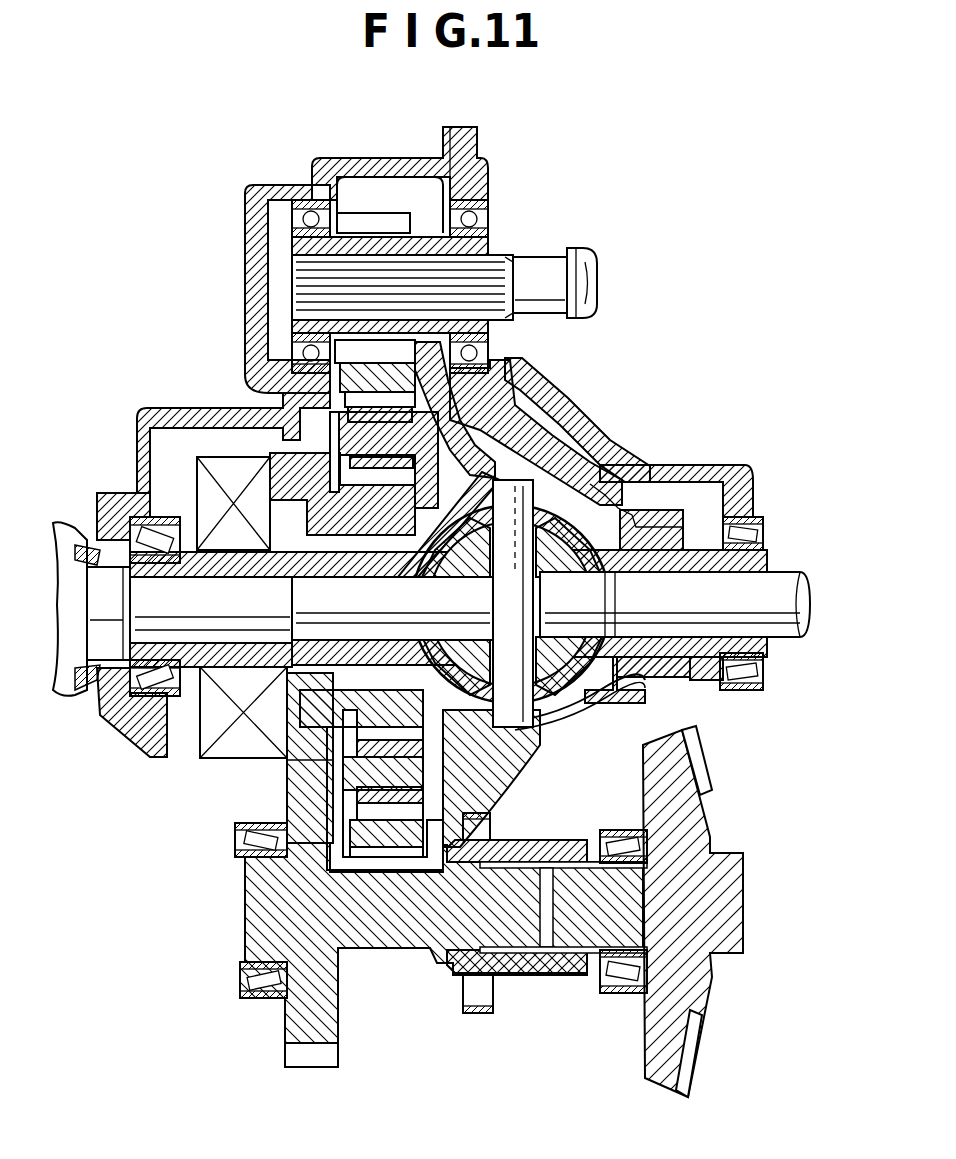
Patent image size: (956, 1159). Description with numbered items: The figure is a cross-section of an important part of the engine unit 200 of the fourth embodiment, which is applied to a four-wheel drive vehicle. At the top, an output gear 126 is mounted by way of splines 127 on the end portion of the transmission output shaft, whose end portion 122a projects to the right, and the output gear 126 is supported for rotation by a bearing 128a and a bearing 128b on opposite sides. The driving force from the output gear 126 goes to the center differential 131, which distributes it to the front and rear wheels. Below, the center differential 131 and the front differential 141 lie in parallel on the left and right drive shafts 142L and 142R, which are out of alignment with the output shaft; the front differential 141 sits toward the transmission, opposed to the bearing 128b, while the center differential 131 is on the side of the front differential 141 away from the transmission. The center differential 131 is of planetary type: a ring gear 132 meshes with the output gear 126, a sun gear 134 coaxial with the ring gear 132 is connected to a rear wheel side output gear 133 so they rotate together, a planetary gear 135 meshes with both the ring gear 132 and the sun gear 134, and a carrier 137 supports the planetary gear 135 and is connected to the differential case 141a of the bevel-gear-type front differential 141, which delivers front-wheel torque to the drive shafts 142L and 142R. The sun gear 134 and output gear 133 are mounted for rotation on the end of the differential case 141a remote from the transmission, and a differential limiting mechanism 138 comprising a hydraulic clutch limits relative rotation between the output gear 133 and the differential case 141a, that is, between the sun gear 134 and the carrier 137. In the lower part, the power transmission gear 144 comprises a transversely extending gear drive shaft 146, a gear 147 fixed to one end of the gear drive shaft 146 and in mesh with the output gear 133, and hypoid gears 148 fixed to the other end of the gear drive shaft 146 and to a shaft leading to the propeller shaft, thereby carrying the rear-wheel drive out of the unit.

The engine unit 200 is at (762, 350).
The input shaft end 122a is at (536, 275).
The output gear 126 is at (380, 222).
The splines 127 is at (310, 290).
The bearing 128a is at (307, 200).
The bearing 128b is at (493, 182).
The center differential 131 is at (322, 421).
The ring gear 132 is at (420, 383).
The rear wheel side output gear 133 is at (273, 757).
The sun gear 134 is at (457, 448).
The planetary gear 135 is at (323, 450).
The carrier 137 is at (427, 765).
The differential limiting mechanism 138 is at (197, 490).
The front differential 141 is at (592, 492).
The differential case 141a is at (562, 703).
The left drive shaft 142L is at (110, 632).
The right drive shaft 142R is at (790, 640).
The power transmission gear 144 is at (412, 953).
The gear drive shaft 146 is at (512, 935).
The gear 147 is at (316, 1062).
The hypoid gears 148 is at (700, 1068).